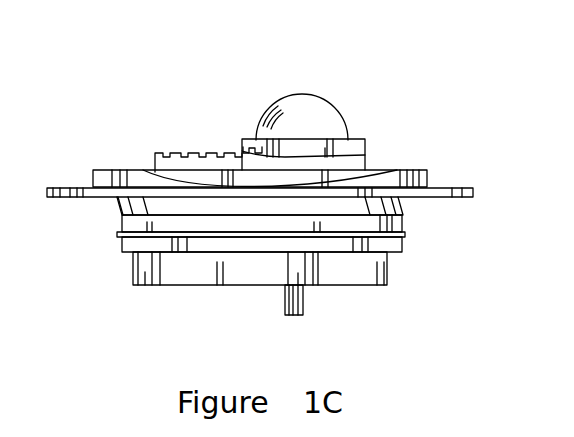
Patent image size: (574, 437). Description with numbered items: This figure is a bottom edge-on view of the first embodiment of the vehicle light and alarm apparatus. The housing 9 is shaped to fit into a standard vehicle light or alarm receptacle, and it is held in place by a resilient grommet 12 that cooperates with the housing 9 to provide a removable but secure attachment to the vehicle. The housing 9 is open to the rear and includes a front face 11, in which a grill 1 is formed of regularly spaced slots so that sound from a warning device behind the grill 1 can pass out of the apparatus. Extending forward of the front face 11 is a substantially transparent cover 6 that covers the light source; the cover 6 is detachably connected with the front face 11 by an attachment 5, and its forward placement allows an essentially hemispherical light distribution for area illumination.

The grill 1 is at (203, 152).
The attachment 5 is at (365, 144).
The transparent cover 6 is at (336, 98).
The housing 9 is at (133, 270).
The front face 11 is at (262, 189).
The resilient grommet 12 is at (427, 178).